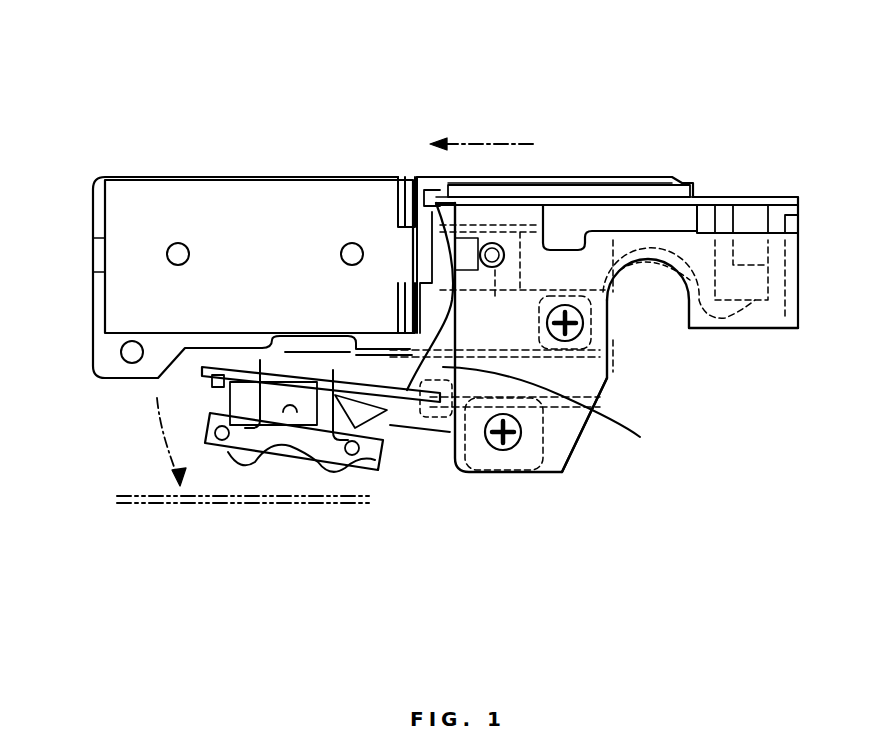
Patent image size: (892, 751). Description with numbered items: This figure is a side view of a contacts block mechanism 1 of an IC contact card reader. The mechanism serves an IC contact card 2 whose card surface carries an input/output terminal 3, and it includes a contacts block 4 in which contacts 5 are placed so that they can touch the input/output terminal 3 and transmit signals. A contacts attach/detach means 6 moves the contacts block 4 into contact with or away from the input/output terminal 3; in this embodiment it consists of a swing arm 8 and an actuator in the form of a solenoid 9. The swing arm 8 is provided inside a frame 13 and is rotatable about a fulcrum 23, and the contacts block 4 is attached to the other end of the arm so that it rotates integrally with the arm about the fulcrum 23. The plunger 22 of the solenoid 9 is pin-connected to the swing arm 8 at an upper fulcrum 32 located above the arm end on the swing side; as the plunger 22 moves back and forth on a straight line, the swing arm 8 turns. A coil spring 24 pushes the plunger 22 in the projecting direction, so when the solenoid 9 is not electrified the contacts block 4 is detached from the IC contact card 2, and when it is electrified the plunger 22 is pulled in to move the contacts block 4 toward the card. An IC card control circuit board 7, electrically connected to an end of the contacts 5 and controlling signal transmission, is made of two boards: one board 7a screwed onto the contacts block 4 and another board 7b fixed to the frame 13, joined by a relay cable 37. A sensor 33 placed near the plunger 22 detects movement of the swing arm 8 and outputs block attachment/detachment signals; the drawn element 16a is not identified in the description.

The contacts block mechanism 1 is at (106, 153).
The IC contact card 2 is at (137, 505).
The input/output terminal 3 is at (277, 505).
The contacts block 4 is at (390, 480).
The contacts 5 is at (225, 458).
The contacts attach/detach means 6 is at (378, 218).
The IC card control circuit board 7 is at (400, 433).
The board 7a is at (202, 375).
The board 7b is at (748, 197).
The swing arm 8 is at (594, 337).
The solenoid 9 is at (205, 195).
The frame 13 is at (580, 443).
The engaging portion 16a is at (612, 302).
The plunger 22 is at (492, 292).
The fulcrum 23 is at (524, 458).
The coil spring 24 is at (435, 202).
The upper fulcrum 32 is at (497, 232).
The sensor 33 is at (553, 217).
The relay cable 37 is at (612, 373).